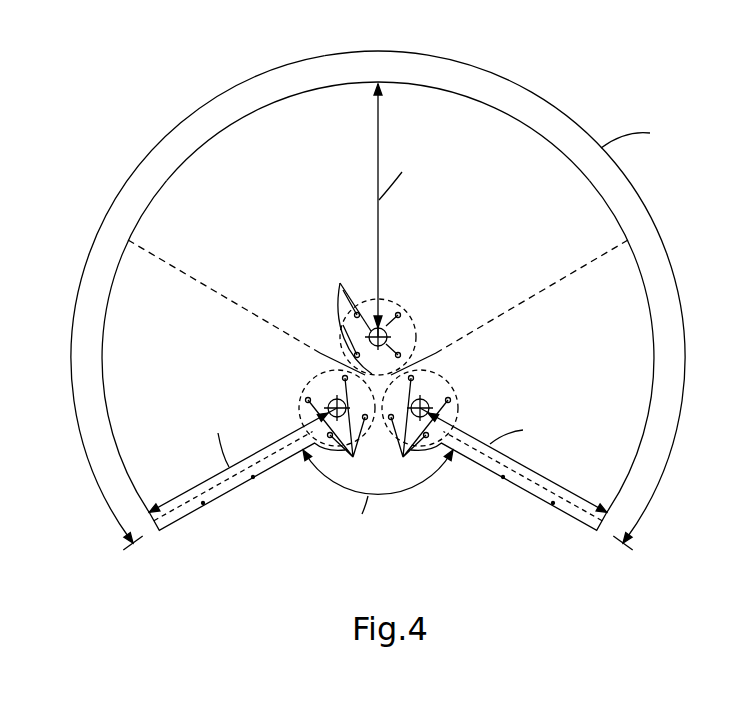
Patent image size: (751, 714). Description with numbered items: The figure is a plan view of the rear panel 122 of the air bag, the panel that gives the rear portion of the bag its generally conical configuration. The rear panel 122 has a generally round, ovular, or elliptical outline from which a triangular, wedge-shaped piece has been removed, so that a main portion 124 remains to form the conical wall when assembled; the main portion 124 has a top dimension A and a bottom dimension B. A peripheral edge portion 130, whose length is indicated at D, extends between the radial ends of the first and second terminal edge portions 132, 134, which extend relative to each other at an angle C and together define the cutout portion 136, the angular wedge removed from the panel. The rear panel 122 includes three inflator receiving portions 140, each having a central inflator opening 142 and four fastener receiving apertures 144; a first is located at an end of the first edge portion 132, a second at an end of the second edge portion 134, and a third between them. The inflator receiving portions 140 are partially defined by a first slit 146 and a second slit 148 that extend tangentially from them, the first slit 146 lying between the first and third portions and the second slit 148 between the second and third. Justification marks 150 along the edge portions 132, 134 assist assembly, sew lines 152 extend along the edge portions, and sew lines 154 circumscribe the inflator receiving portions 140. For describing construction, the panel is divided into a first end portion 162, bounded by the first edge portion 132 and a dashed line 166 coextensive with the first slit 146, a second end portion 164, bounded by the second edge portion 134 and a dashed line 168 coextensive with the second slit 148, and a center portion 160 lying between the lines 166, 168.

The rear panel 122 is at (182, 98).
The main portion 124 is at (280, 133).
The peripheral edge portion 130 is at (540, 133).
The first terminal edge portion 132 is at (233, 492).
The second terminal edge portion 134 is at (525, 493).
The cutout portion 136 is at (457, 600).
The inflator receiving portion 140 is at (362, 282).
The central inflator opening 142 is at (386, 332).
The fastener receiving aperture 144 is at (378, 371).
The first slit 146 is at (322, 345).
The second slit 148 is at (437, 348).
The justification marks 150 is at (203, 503).
The sew lines 152 is at (204, 485).
The sew lines 154 is at (395, 300).
The center portion 160 is at (470, 122).
The first end portion 162 is at (127, 405).
The second end portion 164 is at (635, 342).
The dashed line 166 is at (237, 302).
The dashed line 168 is at (540, 293).